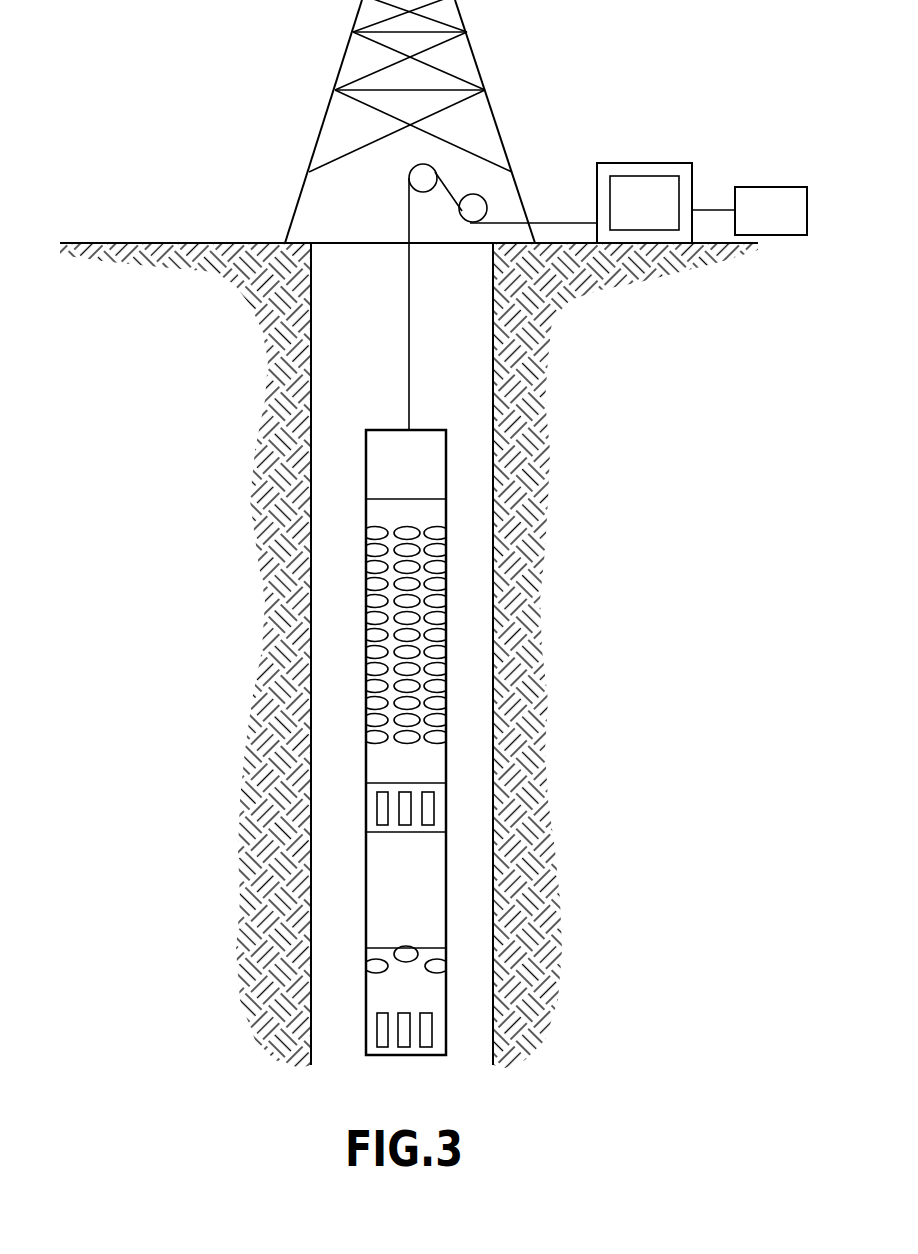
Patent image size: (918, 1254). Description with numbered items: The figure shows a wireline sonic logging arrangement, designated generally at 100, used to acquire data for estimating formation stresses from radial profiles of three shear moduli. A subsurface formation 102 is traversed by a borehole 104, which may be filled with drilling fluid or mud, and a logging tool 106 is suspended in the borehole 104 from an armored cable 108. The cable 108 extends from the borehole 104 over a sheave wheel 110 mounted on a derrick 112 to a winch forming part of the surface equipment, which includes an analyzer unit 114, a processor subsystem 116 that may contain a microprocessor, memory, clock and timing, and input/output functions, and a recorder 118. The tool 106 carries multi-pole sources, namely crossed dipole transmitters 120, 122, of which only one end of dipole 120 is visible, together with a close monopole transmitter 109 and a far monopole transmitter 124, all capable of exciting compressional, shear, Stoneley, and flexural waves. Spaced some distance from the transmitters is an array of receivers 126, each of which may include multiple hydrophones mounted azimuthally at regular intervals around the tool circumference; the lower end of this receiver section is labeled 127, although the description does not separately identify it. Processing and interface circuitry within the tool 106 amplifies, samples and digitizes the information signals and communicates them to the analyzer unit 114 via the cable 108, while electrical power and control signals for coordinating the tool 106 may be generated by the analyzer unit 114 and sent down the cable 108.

The well logging system 100 is at (172, 170).
The subsurface formation 102 is at (295, 422).
The borehole 104 is at (393, 360).
The logging tool 106 is at (447, 480).
The armored cable 108 is at (409, 283).
The monopole transmitter (close) 109 is at (377, 810).
The sheave wheel 110 is at (409, 172).
The derrick 112 is at (478, 57).
The analyzer unit 114 is at (592, 195).
The processor subsystem 116 is at (645, 195).
The recorder 118 is at (755, 187).
The crossed dipole transmitter 120 is at (402, 952).
The crossed dipole transmitter 122 is at (376, 966).
The monopole transmitter (far) 124 is at (377, 1020).
The receivers 126 is at (447, 570).
The sensor array 127 is at (447, 735).